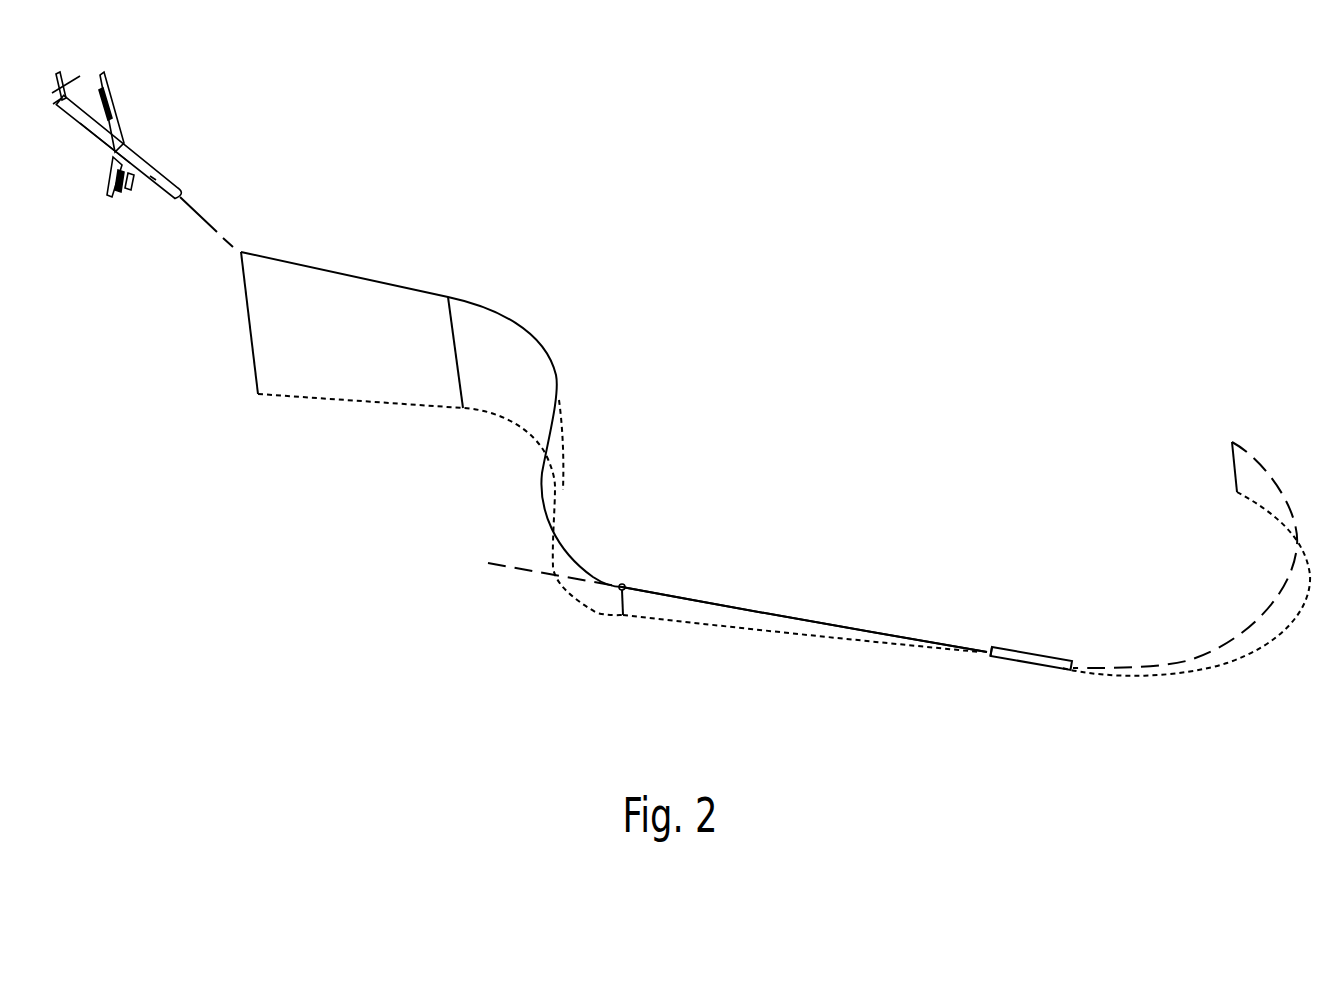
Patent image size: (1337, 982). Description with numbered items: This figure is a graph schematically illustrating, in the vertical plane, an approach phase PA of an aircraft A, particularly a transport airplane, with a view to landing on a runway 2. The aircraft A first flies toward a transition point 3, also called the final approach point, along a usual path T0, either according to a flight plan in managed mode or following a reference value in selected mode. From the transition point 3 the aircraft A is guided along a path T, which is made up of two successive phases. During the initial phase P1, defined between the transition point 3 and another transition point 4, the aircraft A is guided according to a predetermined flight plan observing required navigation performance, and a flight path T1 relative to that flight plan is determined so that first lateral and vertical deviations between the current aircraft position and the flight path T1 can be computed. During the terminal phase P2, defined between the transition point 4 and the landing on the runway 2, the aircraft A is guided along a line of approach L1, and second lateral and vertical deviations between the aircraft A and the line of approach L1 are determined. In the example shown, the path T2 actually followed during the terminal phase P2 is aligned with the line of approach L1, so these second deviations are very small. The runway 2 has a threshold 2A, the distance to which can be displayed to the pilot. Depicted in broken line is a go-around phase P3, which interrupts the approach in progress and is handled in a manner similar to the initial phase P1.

The aircraft A is at (140, 150).
The usual path T0 is at (193, 213).
The transition point 3 is at (242, 247).
The path T is at (622, 340).
The initial phase P1 is at (518, 267).
The flight path T1 is at (398, 284).
The approach phase PA is at (813, 300).
The transition point 4 is at (630, 582).
The line of approach L1 is at (512, 568).
The path T2 is at (787, 614).
The terminal phase P2 is at (902, 611).
The threshold 2A is at (990, 641).
The runway 2 is at (1037, 650).
The go-around phase P3 is at (1250, 443).